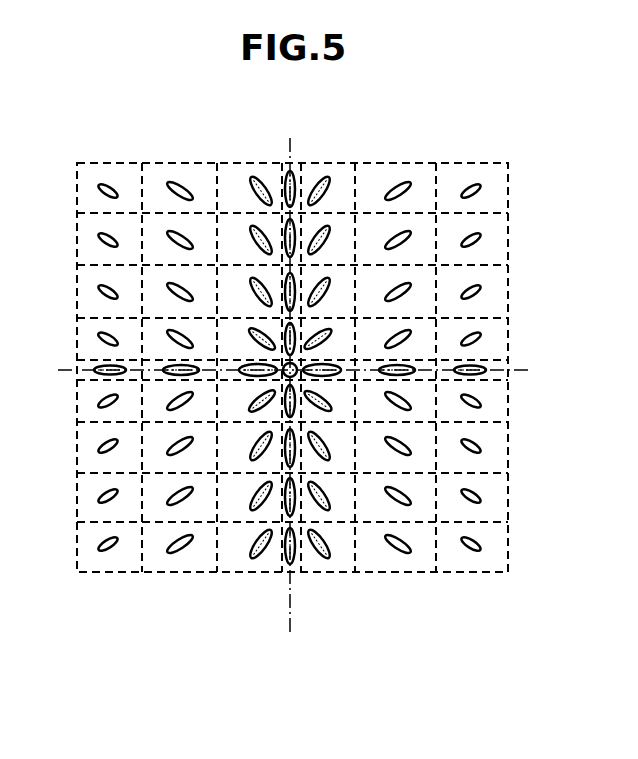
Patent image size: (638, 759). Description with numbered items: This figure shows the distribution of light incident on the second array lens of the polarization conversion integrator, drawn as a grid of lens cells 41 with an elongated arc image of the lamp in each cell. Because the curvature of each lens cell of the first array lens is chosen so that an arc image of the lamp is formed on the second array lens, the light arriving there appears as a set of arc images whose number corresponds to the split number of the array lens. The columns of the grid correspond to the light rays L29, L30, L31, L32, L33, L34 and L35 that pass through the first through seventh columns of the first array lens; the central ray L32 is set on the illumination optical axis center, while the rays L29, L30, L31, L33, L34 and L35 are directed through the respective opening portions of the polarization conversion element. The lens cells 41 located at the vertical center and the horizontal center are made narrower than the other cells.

The lens cells of the second array lens 41 is at (420, 163).
The light ray L29 is at (108, 563).
The light ray L30 is at (183, 563).
The light ray L31 is at (262, 562).
The light ray L32 is at (290, 567).
The light ray L33 is at (333, 560).
The light ray L34 is at (408, 562).
The light ray L35 is at (472, 560).